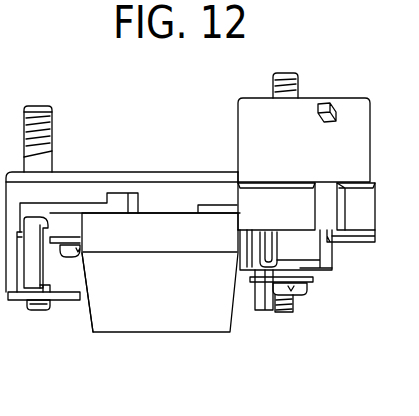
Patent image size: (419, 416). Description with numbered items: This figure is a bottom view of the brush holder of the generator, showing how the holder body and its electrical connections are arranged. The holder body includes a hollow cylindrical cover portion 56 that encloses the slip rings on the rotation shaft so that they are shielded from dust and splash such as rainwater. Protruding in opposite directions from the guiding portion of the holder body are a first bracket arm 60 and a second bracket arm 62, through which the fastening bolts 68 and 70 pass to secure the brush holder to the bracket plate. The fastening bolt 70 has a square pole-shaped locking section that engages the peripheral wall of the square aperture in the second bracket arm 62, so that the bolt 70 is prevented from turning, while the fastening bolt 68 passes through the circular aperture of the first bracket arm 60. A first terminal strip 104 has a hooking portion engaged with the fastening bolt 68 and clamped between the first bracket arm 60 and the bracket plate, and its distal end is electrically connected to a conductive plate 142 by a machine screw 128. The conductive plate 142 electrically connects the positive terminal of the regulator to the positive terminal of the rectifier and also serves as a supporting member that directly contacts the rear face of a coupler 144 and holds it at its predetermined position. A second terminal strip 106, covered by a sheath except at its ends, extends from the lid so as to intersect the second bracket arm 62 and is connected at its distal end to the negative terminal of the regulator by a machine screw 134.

The fastening bolt 70 is at (51, 107).
The machine screw 134 is at (72, 240).
The second terminal strip 106 is at (50, 257).
The cylindrical cover portion 56 is at (165, 320).
The second bracket arm 62 is at (86, 274).
The coupler 144 is at (347, 105).
The conductive plate 142 is at (310, 250).
The first bracket arm 60 is at (248, 270).
The first terminal strip 104 is at (307, 283).
The machine screw 128 is at (303, 294).
The fastening bolt 68 is at (280, 314).